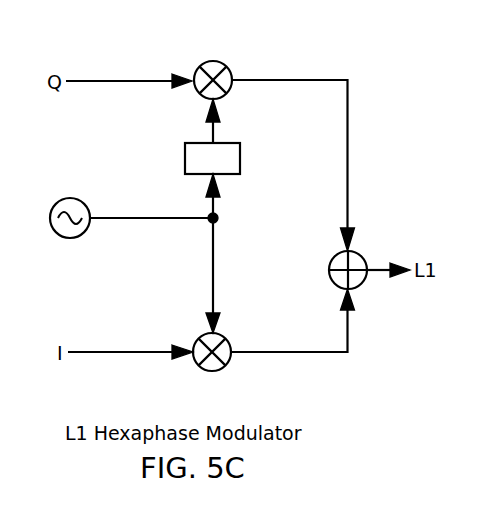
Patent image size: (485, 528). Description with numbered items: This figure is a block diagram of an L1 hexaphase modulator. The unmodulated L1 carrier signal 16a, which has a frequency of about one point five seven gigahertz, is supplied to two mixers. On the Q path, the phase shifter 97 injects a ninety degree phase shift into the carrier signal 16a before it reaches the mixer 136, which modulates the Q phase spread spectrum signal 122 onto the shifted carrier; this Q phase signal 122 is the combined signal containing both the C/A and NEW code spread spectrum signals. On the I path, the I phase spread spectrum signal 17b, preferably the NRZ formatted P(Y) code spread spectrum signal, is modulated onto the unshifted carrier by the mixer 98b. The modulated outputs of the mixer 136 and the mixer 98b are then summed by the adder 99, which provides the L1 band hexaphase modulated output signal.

The Q phase spread spectrum signal 122 is at (100, 81).
The mixer 136 is at (208, 61).
The phase shifter 97 is at (240, 163).
The L1 carrier signal 16a is at (166, 219).
The I phase spread spectrum signal 17b is at (97, 352).
The mixer 98b is at (215, 370).
The adder 99 is at (357, 253).